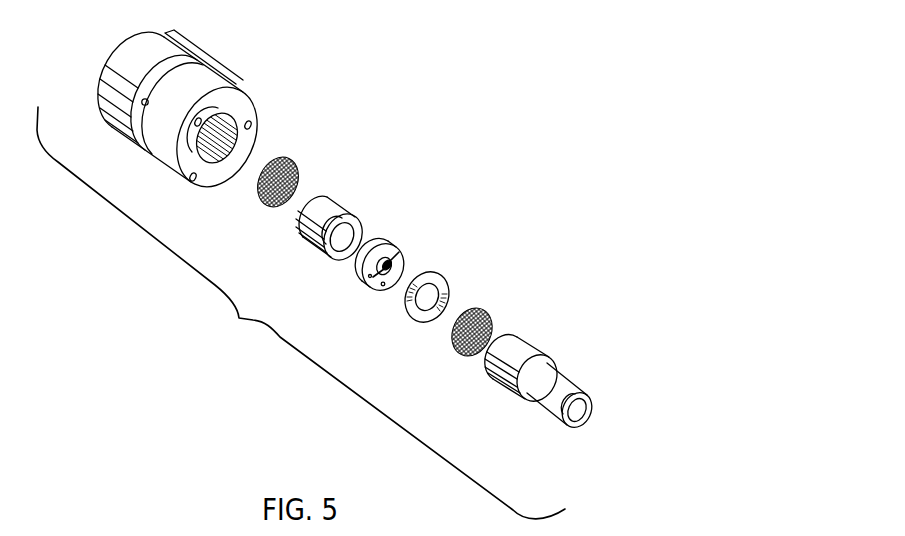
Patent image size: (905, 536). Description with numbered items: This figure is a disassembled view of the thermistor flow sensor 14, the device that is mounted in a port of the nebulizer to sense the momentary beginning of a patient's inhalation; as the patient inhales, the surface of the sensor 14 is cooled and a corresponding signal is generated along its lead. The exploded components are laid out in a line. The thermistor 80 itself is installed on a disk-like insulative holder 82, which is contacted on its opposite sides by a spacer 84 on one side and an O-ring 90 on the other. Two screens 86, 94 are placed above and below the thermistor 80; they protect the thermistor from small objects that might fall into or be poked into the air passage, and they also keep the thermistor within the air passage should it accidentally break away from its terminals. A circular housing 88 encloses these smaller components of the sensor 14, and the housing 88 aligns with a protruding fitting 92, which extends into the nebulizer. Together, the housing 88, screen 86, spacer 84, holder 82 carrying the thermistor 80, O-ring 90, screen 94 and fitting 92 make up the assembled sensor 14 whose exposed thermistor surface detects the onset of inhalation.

The circular housing 88 is at (255, 98).
The screen 86 is at (298, 160).
The spacer 84 is at (362, 215).
The insulative holder 82 is at (402, 268).
The thermistor 80 is at (404, 262).
The O-ring 90 is at (449, 288).
The screen 94 is at (493, 323).
The protruding fitting 92 is at (562, 370).
The thermistor flow sensor 14 is at (301, 313).